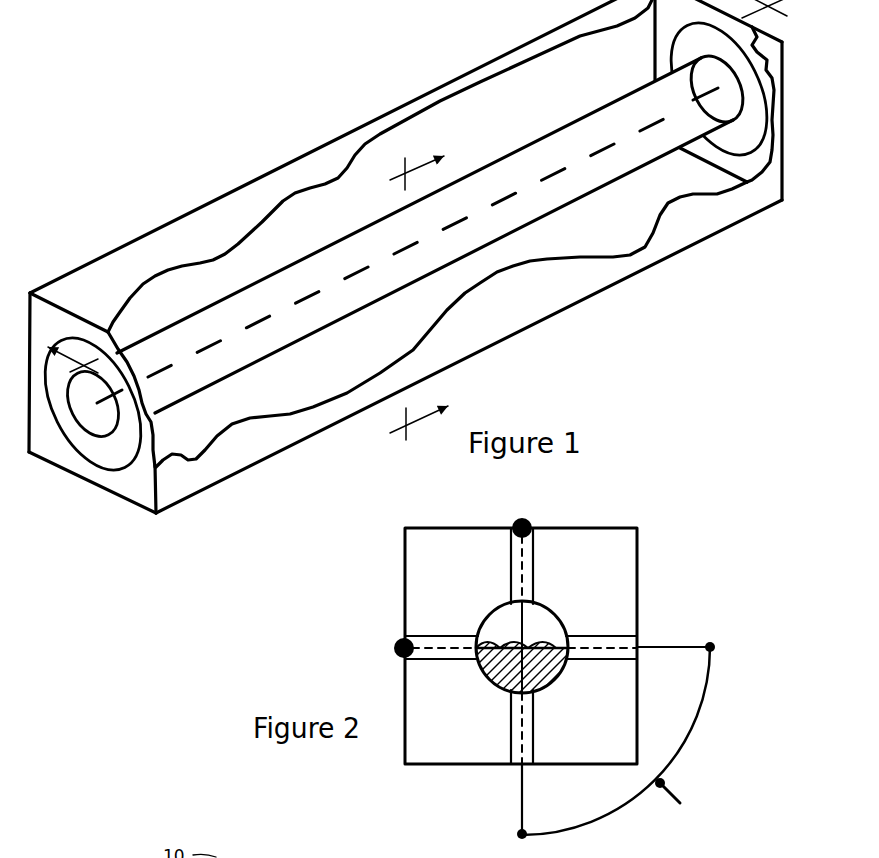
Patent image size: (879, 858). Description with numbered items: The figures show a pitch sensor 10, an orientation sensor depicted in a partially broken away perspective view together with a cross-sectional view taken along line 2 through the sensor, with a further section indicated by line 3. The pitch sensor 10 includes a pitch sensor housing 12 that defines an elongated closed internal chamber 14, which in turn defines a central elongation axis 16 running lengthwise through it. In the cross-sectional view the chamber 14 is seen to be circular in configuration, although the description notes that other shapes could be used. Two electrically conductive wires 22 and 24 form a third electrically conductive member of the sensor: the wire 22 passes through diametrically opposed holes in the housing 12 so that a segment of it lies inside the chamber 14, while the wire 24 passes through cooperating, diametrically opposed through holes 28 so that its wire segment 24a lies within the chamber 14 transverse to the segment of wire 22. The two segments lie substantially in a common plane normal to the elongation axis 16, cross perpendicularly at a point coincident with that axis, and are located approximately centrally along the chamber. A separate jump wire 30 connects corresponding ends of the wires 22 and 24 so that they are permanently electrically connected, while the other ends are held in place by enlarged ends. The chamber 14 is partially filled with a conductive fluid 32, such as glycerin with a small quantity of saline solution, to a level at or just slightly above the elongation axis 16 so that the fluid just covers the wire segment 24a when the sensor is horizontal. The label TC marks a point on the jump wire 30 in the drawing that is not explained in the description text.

In FIG. 1, the pitch sensor 10 is at (330, 105).
In FIG. 1, the pitch sensor housing 12 is at (692, 223).
In FIG. 1, the elongated closed internal chamber 14 is at (455, 243).
In FIG. 1, the central elongation axis 16 is at (258, 327).
In FIG. 1, the section line 2- 2 is at (411, 303).
In FIG. 1, the section line 3- 3 is at (425, 191).
In FIG. 2, the electrically conductive wire 22 is at (520, 553).
In FIG. 2, the electrically conductive wire 24 is at (438, 647).
In FIG. 2, the wire segment 24a is at (546, 657).
In FIG. 2, the through holes 28 is at (610, 636).
In FIG. 2, the jump wire 30 is at (688, 745).
In FIG. 2, the conductive fluid 32 is at (497, 679).
In FIG. 2, the thermocouple TC is at (665, 783).